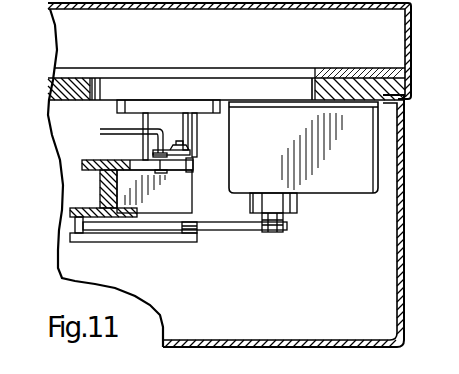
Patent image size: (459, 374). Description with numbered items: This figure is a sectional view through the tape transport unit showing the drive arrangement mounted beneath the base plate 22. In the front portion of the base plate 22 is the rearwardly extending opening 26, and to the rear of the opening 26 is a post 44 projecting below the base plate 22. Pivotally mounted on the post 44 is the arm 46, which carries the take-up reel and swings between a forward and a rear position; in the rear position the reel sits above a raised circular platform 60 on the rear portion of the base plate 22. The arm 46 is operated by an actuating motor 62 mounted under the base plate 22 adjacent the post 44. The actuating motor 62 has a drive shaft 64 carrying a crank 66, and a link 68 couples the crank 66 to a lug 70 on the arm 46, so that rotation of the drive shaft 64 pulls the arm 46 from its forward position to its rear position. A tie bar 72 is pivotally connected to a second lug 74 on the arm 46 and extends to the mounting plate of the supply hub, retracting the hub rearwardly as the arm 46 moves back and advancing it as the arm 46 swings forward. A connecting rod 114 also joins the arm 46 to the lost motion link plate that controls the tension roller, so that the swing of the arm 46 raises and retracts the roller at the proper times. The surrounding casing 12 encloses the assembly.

The casing 12 is at (407, 223).
The base plate 22 is at (78, 85).
The opening 26 is at (312, 80).
The post 44 is at (167, 120).
The arm 46 is at (110, 160).
The raised circular platform 60 is at (362, 68).
The actuating motor 62 is at (337, 180).
The drive shaft 64 is at (285, 220).
The crank 66 is at (245, 231).
The link 68 is at (140, 241).
The lug 70 is at (72, 208).
The tie bar 72 is at (170, 152).
The lug 74 is at (192, 167).
The connecting rod 114 is at (120, 130).